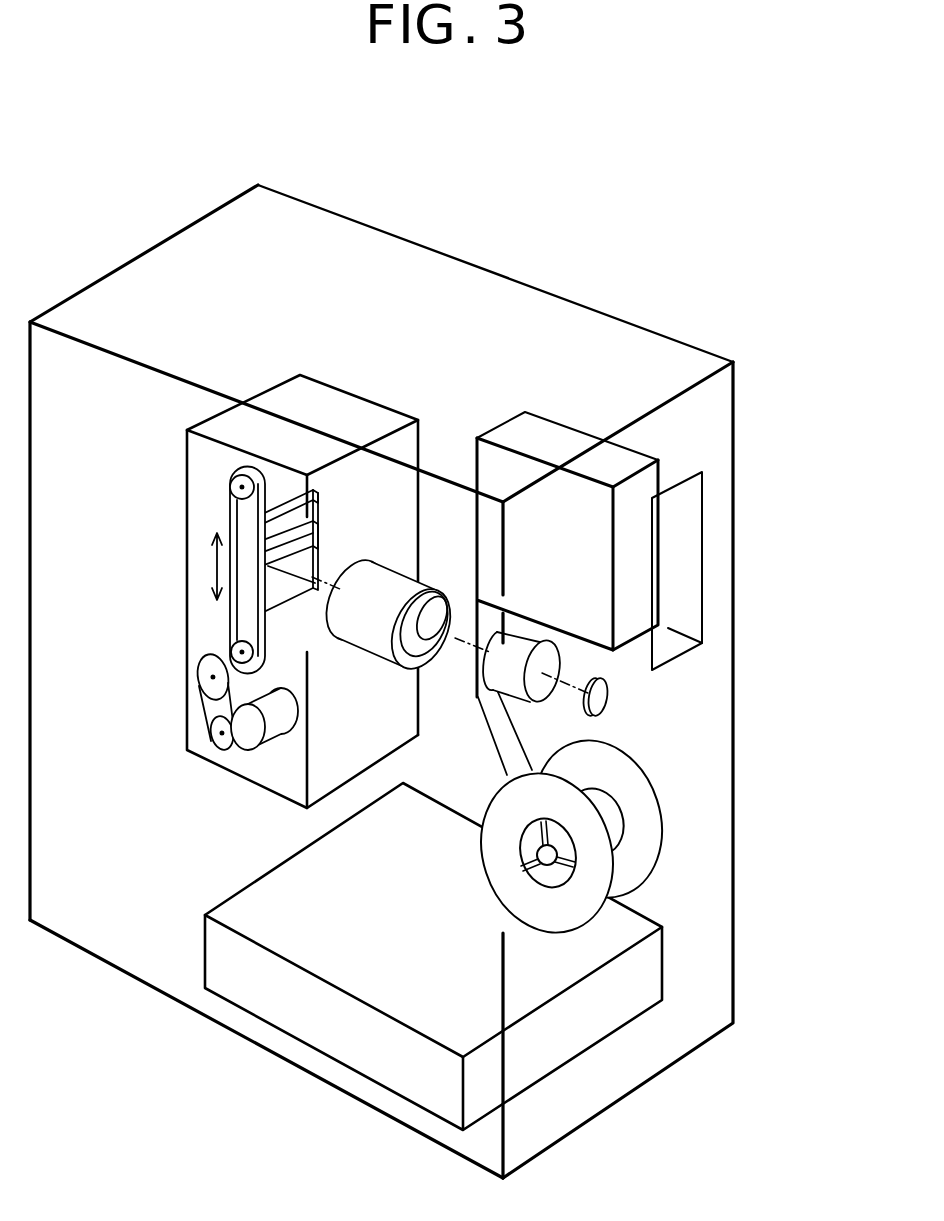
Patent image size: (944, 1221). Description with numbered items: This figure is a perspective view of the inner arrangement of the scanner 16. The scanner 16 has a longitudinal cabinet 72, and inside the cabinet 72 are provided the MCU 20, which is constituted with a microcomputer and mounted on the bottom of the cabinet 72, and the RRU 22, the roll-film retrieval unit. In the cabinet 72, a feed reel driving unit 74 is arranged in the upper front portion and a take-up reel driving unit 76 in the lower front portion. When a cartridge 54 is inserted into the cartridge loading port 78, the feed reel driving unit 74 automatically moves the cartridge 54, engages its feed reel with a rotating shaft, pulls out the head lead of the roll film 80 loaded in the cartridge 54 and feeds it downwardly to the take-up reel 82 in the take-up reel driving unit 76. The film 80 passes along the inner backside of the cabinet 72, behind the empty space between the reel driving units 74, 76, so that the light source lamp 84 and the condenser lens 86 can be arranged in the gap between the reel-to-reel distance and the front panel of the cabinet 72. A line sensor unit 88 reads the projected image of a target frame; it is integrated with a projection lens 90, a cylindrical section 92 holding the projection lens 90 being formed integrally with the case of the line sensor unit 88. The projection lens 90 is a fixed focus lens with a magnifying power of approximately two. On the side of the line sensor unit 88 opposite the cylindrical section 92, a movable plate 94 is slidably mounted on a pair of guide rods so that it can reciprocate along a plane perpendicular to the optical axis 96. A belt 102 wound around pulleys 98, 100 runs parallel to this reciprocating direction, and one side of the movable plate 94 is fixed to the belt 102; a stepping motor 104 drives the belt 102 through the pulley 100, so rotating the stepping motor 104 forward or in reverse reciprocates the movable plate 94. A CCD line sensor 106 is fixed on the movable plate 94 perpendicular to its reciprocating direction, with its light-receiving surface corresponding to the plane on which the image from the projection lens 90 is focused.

The scanner 16 is at (381, 681).
The MCU 20 is at (514, 956).
The RRU 22 is at (648, 886).
The cartridge 54 is at (592, 432).
The cabinet 72 is at (130, 975).
The feed reel driving unit 74 is at (638, 477).
The take-up reel driving unit 76 is at (476, 924).
The cartridge loading port 78 is at (672, 650).
The roll film 80 is at (490, 745).
The take-up reel 82 is at (569, 932).
The light source lamp 84 is at (602, 705).
The condenser lens 86 is at (563, 662).
The line sensor unit 88 is at (313, 512).
The projection lens 90 is at (466, 600).
The cylindrical section 92 is at (405, 532).
The movable plate 94 is at (347, 483).
The optical axis 96 is at (466, 618).
The pulley 98 is at (228, 482).
The pulley 100 is at (232, 655).
The belt 102 is at (228, 513).
The stepping motor 104 is at (270, 743).
The CCD line sensor 106 is at (317, 540).